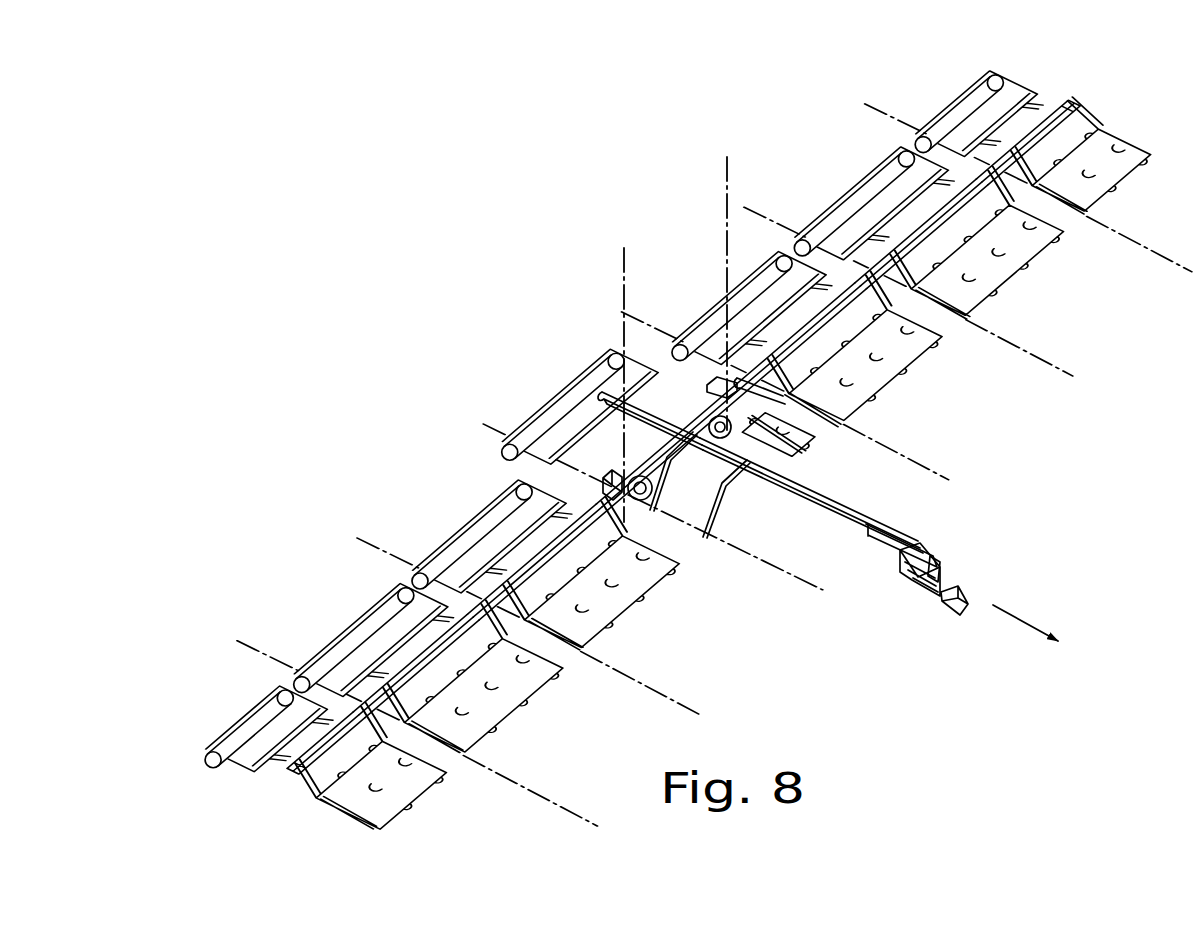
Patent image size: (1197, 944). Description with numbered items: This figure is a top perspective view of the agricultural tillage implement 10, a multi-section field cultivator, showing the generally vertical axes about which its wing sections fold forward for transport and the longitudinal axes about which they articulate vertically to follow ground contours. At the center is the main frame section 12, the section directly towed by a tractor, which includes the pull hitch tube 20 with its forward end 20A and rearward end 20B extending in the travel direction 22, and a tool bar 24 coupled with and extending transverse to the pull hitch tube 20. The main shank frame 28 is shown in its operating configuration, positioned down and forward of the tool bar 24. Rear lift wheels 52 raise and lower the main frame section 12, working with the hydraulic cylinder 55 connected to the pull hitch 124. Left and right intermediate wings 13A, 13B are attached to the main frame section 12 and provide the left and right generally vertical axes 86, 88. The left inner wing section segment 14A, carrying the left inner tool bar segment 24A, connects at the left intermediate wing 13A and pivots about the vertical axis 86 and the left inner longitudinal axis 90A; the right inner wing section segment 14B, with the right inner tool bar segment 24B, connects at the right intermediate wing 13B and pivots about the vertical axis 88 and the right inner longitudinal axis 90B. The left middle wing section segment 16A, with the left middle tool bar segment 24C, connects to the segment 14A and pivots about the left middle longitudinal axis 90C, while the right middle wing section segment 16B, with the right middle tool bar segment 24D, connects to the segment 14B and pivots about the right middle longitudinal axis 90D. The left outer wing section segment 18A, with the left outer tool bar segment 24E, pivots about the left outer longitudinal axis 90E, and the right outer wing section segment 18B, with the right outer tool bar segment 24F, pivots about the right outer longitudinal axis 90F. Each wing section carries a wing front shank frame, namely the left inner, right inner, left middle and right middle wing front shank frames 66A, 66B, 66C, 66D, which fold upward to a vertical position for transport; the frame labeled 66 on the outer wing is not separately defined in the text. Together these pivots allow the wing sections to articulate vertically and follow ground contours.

The agricultural tillage implement 10 is at (482, 371).
The main frame section 12 is at (800, 488).
The left intermediate wing 13A is at (777, 433).
The right intermediate wing 13B is at (580, 407).
The left inner wing section segment 14A is at (749, 316).
The right inner wing section segment 14B is at (489, 544).
The left middle wing section segment 16A is at (871, 211).
The right middle wing section segment 16B is at (370, 648).
The left outer wing section segment 18A is at (976, 122).
The right outer wing section segment 18B is at (332, 758).
The pull hitch tube 20 is at (893, 535).
The forward end 20A is at (920, 548).
The rearward end 20B is at (563, 406).
The travel direction 22 is at (1028, 612).
The tool bar 24 is at (690, 425).
The left inner tool bar segment 24A is at (732, 396).
The right inner tool bar segment 24B is at (537, 562).
The left middle tool bar segment 24C is at (921, 234).
The right middle tool bar segment 24D is at (416, 665).
The left outer tool bar segment 24E is at (1029, 142).
The right outer tool bar segment 24F is at (326, 743).
The main shank frame 28 is at (747, 478).
The rear lift wheels 52 is at (640, 480).
The hydraulic cylinder 55 is at (940, 562).
The hook plate 66 is at (1078, 156).
The left inner wing front shank frame 66A is at (856, 349).
The right inner wing front shank frame 66B is at (594, 574).
The left middle wing front shank frame 66C is at (979, 242).
The right middle wing front shank frame 66D is at (476, 678).
The left generally vertical axis 86 is at (725, 186).
The right generally vertical axis 88 is at (620, 262).
The left inner longitudinal axis 90A is at (785, 396).
The right inner longitudinal axis 90B is at (652, 507).
The left middle longitudinal axis 90C is at (908, 291).
The right middle longitudinal axis 90D is at (529, 626).
The left outer longitudinal axis 90E is at (1028, 188).
The right outer longitudinal axis 90F is at (417, 733).
The pull hitch 124 is at (950, 612).